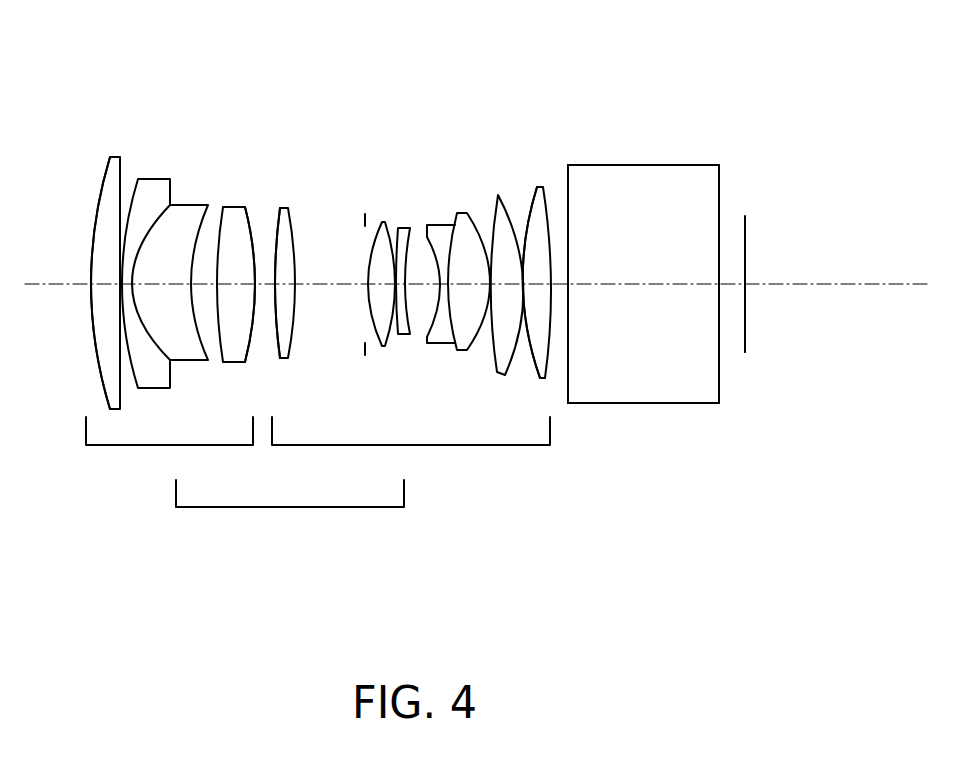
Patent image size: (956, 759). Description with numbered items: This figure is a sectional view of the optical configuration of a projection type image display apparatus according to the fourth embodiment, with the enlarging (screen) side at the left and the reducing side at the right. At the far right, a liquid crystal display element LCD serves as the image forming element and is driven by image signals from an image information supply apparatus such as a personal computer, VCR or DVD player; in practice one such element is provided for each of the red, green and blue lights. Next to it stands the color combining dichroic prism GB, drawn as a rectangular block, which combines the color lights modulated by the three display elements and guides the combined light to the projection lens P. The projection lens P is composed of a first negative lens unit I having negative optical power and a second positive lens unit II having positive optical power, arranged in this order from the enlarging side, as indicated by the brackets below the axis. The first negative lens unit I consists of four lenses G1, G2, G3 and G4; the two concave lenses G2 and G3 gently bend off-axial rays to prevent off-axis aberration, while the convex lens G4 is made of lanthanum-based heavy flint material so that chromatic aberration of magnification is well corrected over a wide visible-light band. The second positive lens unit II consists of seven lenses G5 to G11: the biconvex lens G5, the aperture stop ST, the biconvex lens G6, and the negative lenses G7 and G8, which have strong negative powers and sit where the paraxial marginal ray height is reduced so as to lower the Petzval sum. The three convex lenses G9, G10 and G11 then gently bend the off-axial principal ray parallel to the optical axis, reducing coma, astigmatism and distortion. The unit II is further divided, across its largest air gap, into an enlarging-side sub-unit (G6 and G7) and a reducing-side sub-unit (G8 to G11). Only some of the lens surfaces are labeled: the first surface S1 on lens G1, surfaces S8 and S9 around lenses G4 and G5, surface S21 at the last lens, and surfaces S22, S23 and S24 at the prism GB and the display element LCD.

The first lens surface S1 is at (96, 222).
The lens G1 is at (117, 158).
The concave lens G2 is at (155, 183).
The concave lens G3 is at (192, 207).
The convex lens G4 is at (235, 210).
The eighth lens surface S8 is at (254, 252).
The biconvex lens G5 is at (288, 210).
The ninth lens surface S9 is at (274, 320).
The aperture stop ST is at (366, 220).
The biconvex lens G6 is at (387, 348).
The negative lens G7 is at (407, 341).
The negative lens G8 is at (440, 340).
The convex lens G9 is at (464, 352).
The convex lens G10 is at (500, 370).
The convex lens G11 is at (541, 368).
The twenty-first lens surface S21 is at (546, 200).
The twenty-second surface S22 is at (567, 178).
The color combining dichroic prism GB is at (636, 170).
The twenty-third surface S23 is at (719, 380).
The liquid crystal display element LCD is at (745, 246).
The twenty-fourth surface S24 is at (742, 337).
The first negative lens unit I is at (169, 446).
The second positive lens unit II is at (411, 446).
The projection lens P is at (290, 508).